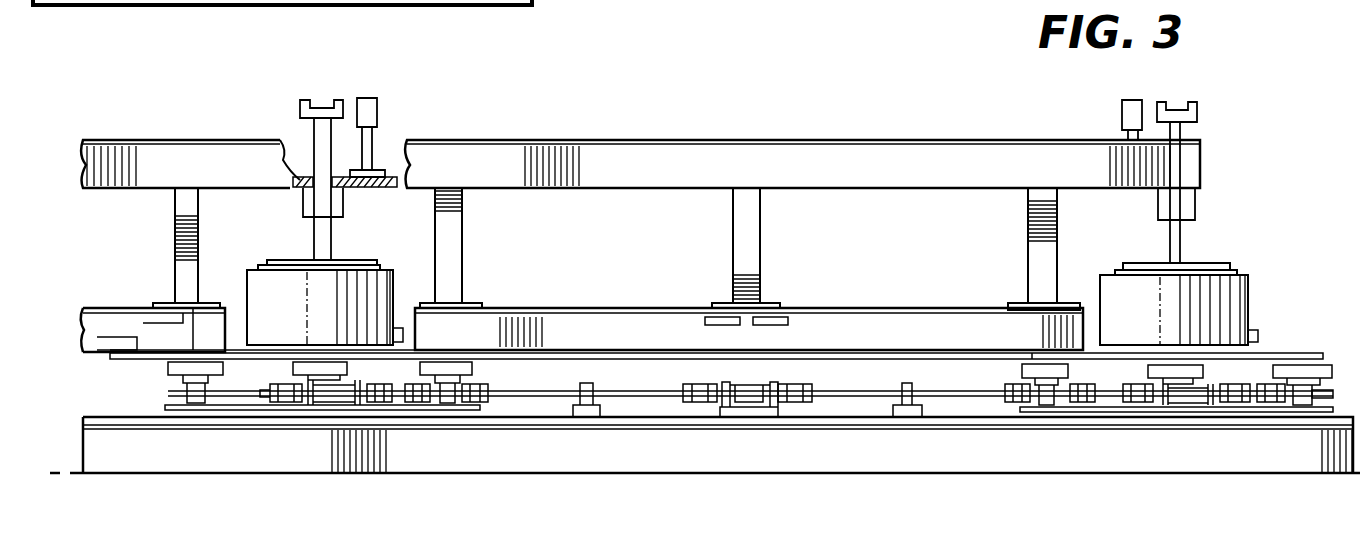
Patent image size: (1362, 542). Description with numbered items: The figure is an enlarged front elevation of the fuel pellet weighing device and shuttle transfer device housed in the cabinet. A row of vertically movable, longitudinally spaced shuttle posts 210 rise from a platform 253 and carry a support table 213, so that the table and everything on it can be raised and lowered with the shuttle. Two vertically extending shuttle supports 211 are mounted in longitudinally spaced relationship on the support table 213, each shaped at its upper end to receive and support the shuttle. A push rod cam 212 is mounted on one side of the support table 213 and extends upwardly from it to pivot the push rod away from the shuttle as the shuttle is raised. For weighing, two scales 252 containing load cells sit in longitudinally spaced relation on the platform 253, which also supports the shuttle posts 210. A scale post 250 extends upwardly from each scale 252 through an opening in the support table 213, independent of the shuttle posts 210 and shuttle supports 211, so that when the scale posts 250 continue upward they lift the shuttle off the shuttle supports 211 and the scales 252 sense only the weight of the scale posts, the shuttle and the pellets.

The shuttle posts 210 is at (188, 250).
The shuttle supports 211 is at (377, 112).
The push rod cam 212 is at (705, 153).
The support table 213 is at (293, 178).
The scale post 250 is at (303, 110).
The scales 252 is at (290, 290).
The platform 253 is at (1300, 346).